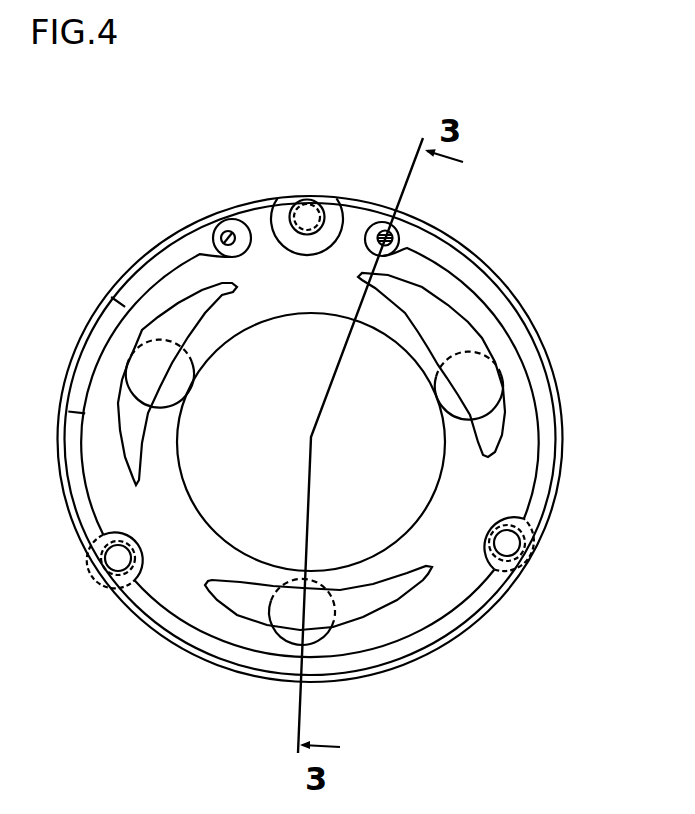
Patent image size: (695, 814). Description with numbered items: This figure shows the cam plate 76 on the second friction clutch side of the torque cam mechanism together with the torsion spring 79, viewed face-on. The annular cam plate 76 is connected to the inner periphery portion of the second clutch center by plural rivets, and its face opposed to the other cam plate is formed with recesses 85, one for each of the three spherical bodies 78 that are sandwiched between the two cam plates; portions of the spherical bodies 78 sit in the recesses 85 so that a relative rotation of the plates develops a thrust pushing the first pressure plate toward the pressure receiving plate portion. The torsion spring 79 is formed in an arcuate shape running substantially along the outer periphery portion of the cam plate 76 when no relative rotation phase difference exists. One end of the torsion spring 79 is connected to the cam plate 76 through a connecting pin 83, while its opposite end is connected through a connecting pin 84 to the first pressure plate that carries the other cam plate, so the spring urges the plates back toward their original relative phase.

The cam plate 76 is at (520, 440).
The spherical bodies 78 is at (187, 330).
The torsion spring 79 is at (247, 655).
The connecting pin 83 is at (385, 236).
The connecting pin 84 is at (228, 230).
The recesses 85 is at (478, 340).